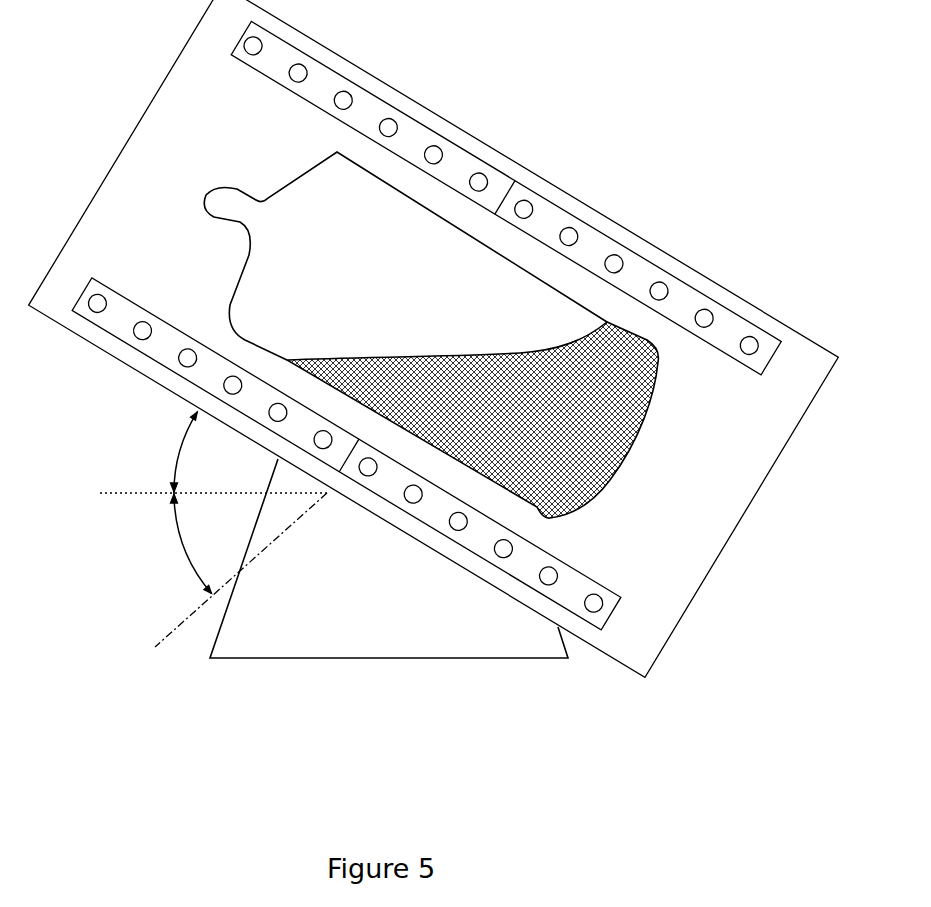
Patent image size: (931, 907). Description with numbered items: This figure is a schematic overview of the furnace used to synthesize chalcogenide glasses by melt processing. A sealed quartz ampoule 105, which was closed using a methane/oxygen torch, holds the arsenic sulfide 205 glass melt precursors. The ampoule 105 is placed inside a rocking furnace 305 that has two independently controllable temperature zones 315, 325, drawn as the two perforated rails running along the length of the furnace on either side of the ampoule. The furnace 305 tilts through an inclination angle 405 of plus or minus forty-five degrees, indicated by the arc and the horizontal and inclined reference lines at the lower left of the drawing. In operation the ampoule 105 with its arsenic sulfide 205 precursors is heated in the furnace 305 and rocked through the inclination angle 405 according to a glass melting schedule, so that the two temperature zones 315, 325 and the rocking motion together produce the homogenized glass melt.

The sealed quartz ampoule 105 is at (301, 174).
The arsenic sulfide glass melt precursors 205 is at (567, 467).
The rocking furnace 305 is at (532, 160).
The first temperature zone 315 is at (420, 130).
The second temperature zone 325 is at (638, 263).
The inclination angle 405 is at (168, 458).